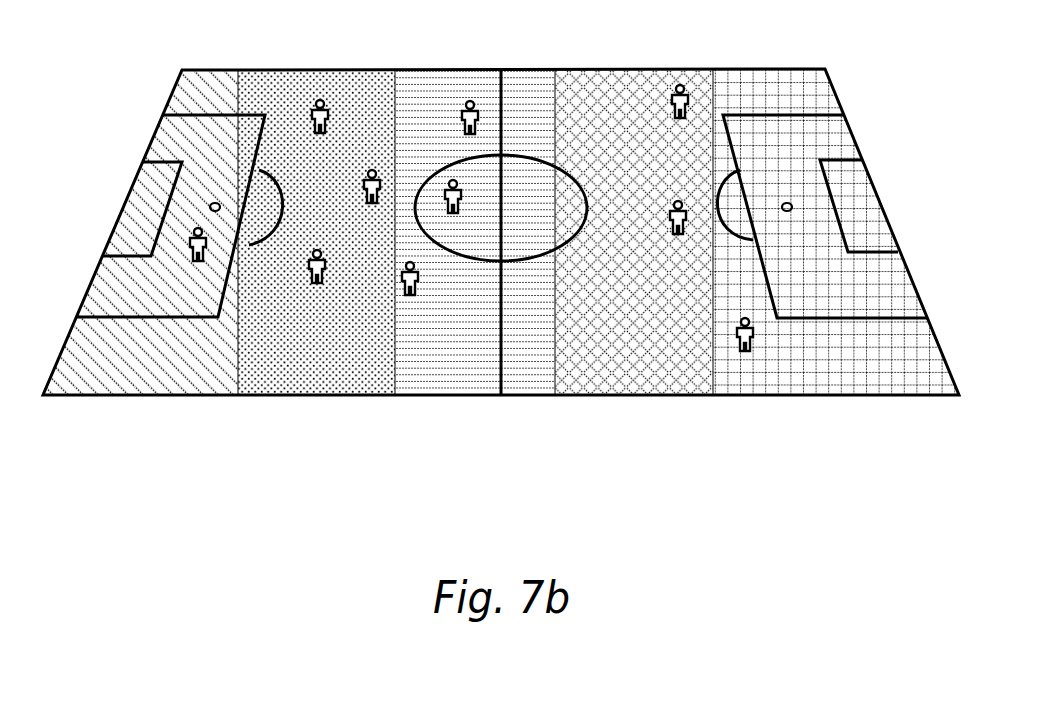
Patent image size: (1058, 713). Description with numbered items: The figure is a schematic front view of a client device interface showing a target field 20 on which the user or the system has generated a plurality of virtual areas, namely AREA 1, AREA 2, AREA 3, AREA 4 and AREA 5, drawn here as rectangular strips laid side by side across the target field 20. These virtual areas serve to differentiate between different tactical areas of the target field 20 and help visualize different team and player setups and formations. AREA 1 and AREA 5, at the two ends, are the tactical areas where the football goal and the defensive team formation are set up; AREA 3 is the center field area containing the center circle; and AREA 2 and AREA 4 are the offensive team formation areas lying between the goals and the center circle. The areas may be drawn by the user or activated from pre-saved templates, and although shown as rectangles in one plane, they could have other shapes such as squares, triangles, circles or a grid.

The target field 20 is at (280, 87).
The AREA 1 is at (172, 380).
The AREA 2 is at (345, 383).
The AREA 3 is at (475, 383).
The AREA 4 is at (648, 380).
The AREA 5 is at (817, 380).